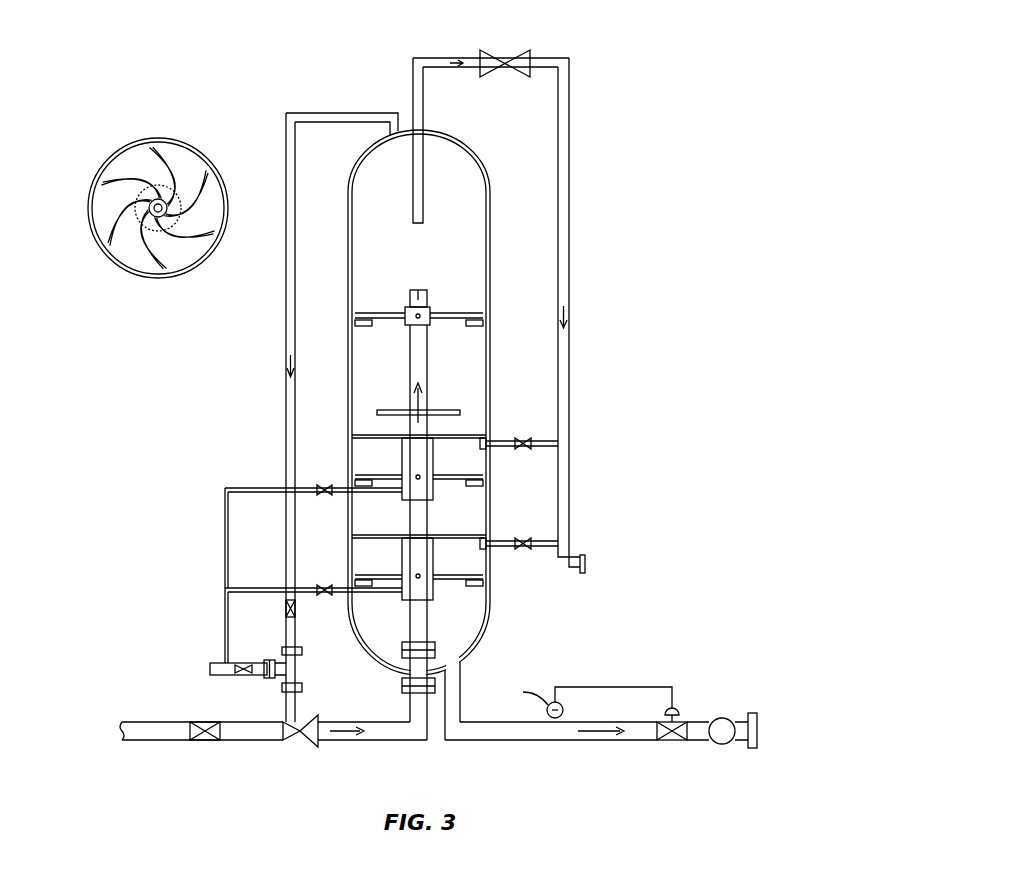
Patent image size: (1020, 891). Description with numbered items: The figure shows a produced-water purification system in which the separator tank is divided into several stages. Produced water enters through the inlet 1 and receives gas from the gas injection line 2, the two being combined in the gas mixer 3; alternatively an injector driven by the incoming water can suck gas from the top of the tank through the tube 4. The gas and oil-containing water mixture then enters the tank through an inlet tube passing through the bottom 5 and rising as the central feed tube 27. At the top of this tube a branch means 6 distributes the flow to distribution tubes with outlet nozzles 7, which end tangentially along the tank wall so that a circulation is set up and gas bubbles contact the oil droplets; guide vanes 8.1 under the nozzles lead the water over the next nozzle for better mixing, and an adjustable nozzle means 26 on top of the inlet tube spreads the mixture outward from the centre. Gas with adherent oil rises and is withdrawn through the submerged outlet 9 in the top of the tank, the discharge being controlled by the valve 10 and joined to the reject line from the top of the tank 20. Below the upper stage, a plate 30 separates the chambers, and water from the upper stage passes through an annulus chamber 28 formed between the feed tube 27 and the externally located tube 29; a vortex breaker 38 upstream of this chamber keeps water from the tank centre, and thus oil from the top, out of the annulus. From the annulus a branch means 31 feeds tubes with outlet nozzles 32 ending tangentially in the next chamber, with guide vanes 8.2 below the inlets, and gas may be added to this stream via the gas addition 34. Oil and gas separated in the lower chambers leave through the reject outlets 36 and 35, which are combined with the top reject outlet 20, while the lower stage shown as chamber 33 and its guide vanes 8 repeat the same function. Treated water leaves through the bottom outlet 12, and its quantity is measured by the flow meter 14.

The inlet 1 is at (125, 742).
The gas injection line 2 is at (194, 670).
The gas mixer 3 is at (318, 745).
The tube 4 is at (345, 113).
The bottom 5 is at (402, 688).
The branch means 6 is at (148, 207).
The outlet nozzles 7 is at (107, 243).
The bracket 8 is at (478, 588).
The guide vanes 8.1 is at (478, 325).
The guide vane 8.2 is at (478, 488).
The submerged outlet 9 is at (423, 205).
The valve 10 is at (525, 60).
The outlet 12 is at (462, 660).
The flow meter 14 is at (724, 744).
The top of the tank / reject outlet 20 is at (569, 312).
The adjustable nozzle means 26 is at (165, 202).
The feed tube 27 is at (410, 375).
The annulus chamber 28 is at (400, 460).
The externally located tube 29 is at (437, 490).
The plate 30 is at (485, 432).
The branch means 31 is at (455, 474).
The outlet nozzles 32 is at (355, 478).
The lower chamber 33 is at (440, 556).
The gas addition 34 is at (225, 548).
The reject outlet 35 is at (548, 543).
The reject outlet 36 is at (500, 440).
The vortex breaker 38 is at (377, 412).